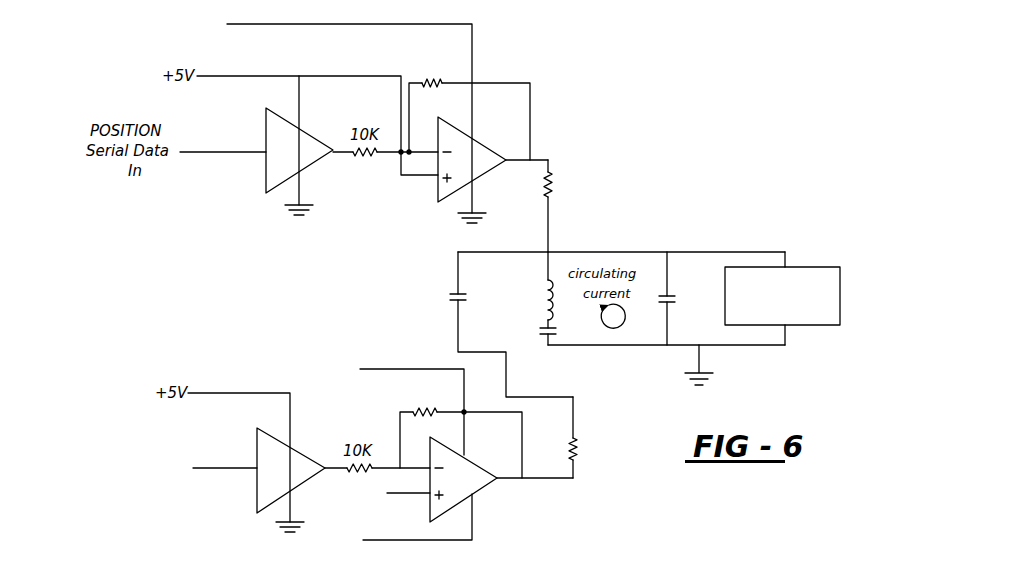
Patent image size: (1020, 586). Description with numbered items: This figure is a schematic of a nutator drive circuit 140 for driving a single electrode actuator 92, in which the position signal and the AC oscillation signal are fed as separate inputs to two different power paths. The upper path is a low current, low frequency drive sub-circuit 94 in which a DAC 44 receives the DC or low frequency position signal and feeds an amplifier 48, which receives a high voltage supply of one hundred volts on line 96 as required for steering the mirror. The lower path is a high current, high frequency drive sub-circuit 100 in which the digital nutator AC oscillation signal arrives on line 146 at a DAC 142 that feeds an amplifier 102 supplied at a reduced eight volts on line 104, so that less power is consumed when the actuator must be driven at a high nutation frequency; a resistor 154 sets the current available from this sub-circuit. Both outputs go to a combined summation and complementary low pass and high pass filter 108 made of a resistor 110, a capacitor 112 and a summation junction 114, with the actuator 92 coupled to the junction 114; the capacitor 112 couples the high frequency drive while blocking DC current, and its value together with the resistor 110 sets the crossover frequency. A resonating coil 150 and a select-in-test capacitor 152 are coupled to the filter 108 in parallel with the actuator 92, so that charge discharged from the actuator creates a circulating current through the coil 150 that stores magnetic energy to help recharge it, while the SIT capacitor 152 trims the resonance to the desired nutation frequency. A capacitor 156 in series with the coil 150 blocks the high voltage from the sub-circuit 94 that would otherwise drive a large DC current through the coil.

The high voltage supply line 96 is at (297, 24).
The low current, low frequency drive sub-circuit 94 is at (552, 80).
The nutator drive circuit 140 is at (680, 93).
The combined summation and complementary low pass and high pass filter 108 is at (638, 167).
The resistor 110 is at (548, 166).
The summation junction 114 is at (548, 248).
The single electrode actuator 92 is at (822, 267).
The DAC 44 is at (263, 175).
The amplifier 48 is at (437, 190).
The resonating coil 150 is at (545, 282).
The capacitor 112 is at (455, 305).
The capacitor 156 is at (546, 338).
The select-in-test (SIT) capacitor 152 is at (665, 305).
The low voltage supply line 104 is at (373, 367).
The line 146 is at (203, 470).
The DAC 142 is at (257, 502).
The amplifier 102 is at (483, 486).
The resistor 154 is at (576, 460).
The high current, high frequency drive sub-circuit 100 is at (588, 503).